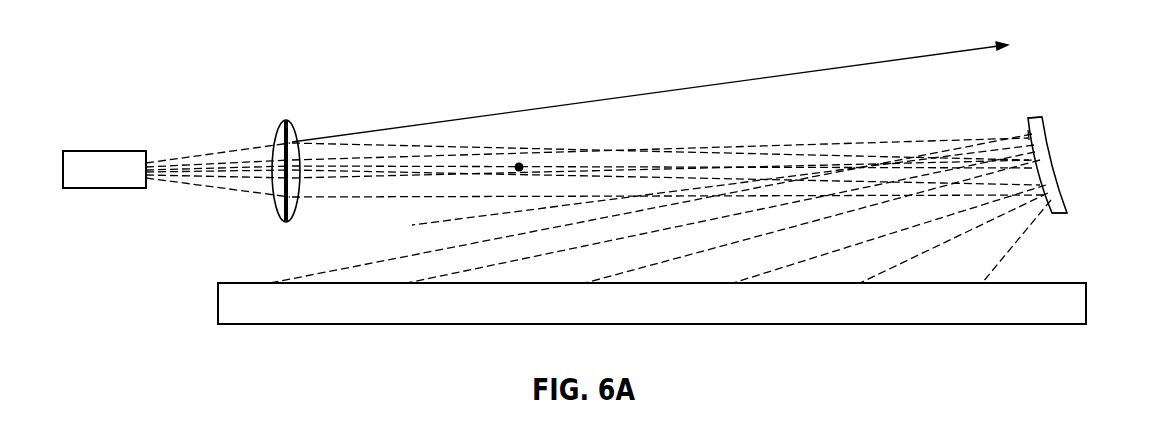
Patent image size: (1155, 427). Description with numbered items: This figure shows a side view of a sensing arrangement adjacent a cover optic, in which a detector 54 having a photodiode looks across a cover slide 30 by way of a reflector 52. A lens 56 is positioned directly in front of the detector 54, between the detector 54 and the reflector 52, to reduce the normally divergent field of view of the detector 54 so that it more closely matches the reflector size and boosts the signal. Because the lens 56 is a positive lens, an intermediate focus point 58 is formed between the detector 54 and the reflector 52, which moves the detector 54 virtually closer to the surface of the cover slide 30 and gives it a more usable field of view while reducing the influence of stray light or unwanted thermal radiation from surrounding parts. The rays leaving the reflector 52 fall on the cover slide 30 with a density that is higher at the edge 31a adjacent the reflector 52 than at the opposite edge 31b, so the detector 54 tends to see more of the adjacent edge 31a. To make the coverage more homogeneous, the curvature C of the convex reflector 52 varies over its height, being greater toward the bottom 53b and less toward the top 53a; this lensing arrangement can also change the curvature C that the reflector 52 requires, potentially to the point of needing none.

The detector 54 is at (105, 150).
The lens 56 is at (287, 120).
The intermediate focus point 58 is at (523, 163).
The reflector 52 is at (1050, 166).
The curvature C is at (1027, 136).
The top 53a is at (1042, 117).
The bottom 53b is at (1066, 214).
The cover slide 30 is at (979, 325).
The edge/side 31a is at (1003, 283).
The opposite edge 31b is at (259, 283).